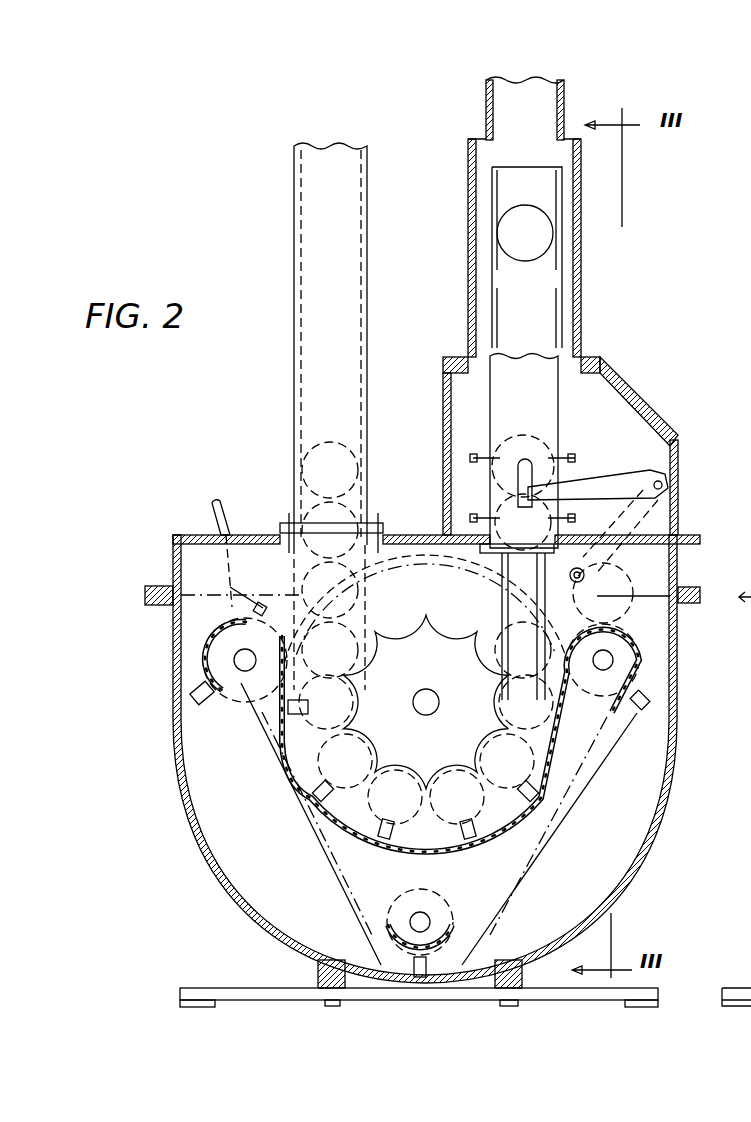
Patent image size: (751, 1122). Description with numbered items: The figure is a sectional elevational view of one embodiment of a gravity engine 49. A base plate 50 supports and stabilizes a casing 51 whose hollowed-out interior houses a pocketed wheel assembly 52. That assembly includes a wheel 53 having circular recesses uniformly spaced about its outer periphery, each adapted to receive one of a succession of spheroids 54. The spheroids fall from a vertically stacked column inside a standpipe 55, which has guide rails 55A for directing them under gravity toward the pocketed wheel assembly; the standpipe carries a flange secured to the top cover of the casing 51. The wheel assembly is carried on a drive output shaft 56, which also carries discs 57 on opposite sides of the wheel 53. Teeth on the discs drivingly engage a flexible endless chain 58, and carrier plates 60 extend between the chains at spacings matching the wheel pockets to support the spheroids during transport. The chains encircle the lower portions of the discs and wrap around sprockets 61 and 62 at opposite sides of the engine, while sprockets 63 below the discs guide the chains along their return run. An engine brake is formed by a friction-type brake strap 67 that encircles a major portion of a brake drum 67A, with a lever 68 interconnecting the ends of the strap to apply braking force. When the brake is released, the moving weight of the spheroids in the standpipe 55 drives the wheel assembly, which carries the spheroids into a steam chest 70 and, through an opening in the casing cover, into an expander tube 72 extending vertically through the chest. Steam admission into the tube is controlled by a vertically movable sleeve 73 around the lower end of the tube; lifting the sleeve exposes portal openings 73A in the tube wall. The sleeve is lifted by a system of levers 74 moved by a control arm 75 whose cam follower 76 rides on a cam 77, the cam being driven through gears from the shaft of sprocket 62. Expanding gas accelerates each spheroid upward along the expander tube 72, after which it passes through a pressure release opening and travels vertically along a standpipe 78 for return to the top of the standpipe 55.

The gravity engine 49 is at (165, 669).
The base plate 50 is at (230, 988).
The casing 51 is at (173, 772).
The pocketed wheel assembly 52 is at (432, 552).
The wheel 53 is at (426, 702).
The spheroids 54 is at (518, 208).
The standpipe 55 is at (368, 292).
The guide rails 55A is at (285, 553).
The drive output shaft 56 is at (437, 694).
The discs 57 is at (425, 609).
The flexible endless chain 58 is at (385, 843).
The carrier plates 60 is at (328, 784).
The sprocket 61 is at (241, 684).
The sprocket 62 is at (612, 652).
The sprockets 63 is at (440, 904).
The brake strap 67 is at (196, 633).
The brake drum 67A is at (198, 662).
The lever 68 is at (228, 515).
The steam chest 70 is at (622, 385).
The expander tube 72 is at (526, 308).
The sleeve 73 is at (490, 446).
The portal openings 73A is at (545, 490).
The levers 74 is at (606, 500).
The control arm 75 is at (640, 520).
The cam follower 76 is at (590, 570).
The cam 77 is at (678, 584).
The standpipe 78 is at (565, 118).